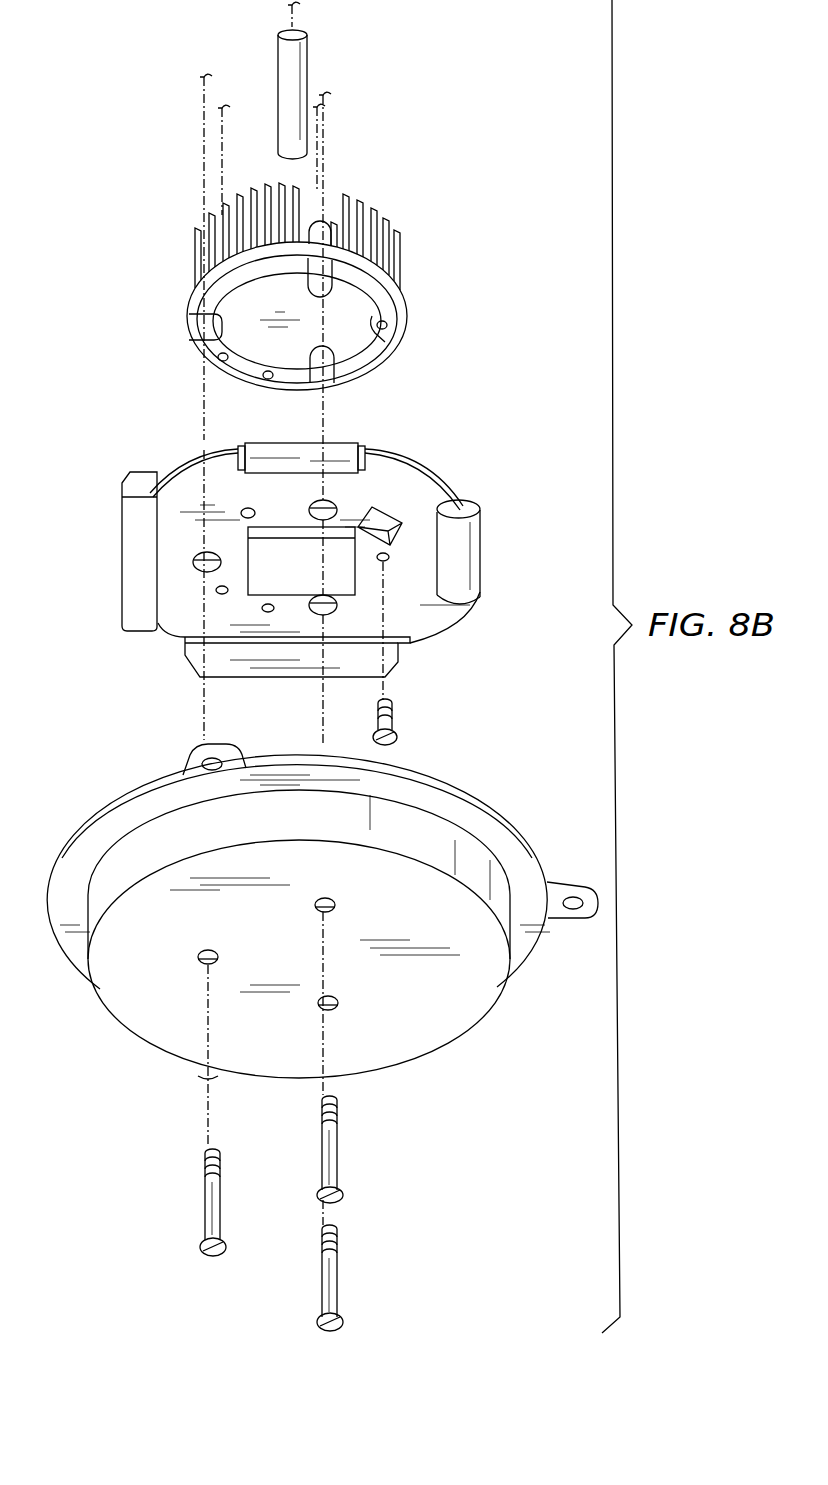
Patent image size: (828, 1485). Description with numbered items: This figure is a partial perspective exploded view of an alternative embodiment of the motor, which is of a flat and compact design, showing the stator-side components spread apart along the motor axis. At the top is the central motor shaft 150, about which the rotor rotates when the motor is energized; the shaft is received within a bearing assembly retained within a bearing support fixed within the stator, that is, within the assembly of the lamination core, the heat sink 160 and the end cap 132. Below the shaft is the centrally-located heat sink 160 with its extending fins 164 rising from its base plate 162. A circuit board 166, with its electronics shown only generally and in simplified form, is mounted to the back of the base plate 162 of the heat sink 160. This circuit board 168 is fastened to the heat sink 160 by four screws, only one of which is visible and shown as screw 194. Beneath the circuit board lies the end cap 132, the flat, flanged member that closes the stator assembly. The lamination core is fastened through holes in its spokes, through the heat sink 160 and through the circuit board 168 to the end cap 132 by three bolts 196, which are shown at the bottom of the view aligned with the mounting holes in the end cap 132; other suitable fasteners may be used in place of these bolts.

The central motor shaft 150 is at (307, 70).
The heat sink 160 is at (255, 287).
The fins 164 is at (197, 240).
The base plate 162 is at (200, 340).
The circuit board 166 is at (264, 560).
The circuit board 168 is at (440, 622).
The screw 194 is at (393, 718).
The end cap 132 is at (143, 1042).
The bolts 196 is at (205, 1205).